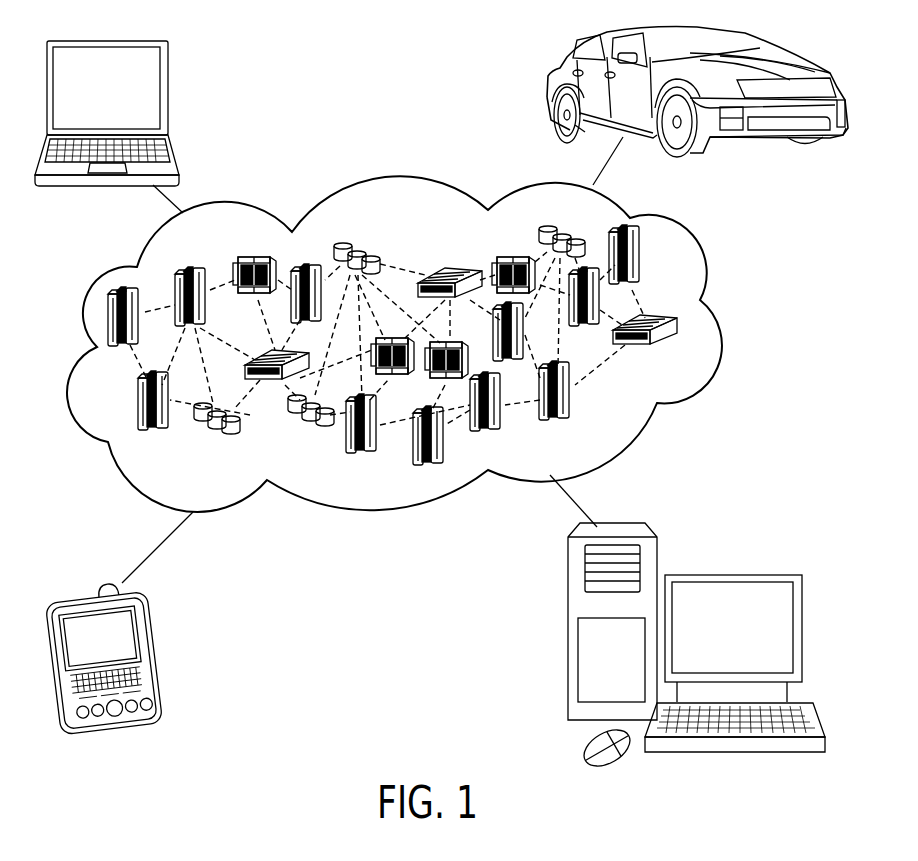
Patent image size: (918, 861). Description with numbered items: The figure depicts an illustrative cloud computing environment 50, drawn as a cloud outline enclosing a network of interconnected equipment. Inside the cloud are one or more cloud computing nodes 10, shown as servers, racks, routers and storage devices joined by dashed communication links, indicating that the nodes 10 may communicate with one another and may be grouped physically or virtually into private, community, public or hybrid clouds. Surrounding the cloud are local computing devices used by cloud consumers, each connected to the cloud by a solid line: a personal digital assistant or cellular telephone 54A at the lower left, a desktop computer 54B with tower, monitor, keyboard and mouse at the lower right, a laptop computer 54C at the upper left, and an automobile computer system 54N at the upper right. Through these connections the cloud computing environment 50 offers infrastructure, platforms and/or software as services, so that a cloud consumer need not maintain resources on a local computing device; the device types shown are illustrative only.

The cloud computing node 10 is at (705, 358).
The cloud computing environment 50 is at (747, 335).
The personal digital assistant or cellular telephone 54A is at (153, 648).
The desktop computer 54B is at (763, 573).
The laptop computer 54C is at (167, 105).
The automobile computer system 54N is at (550, 80).